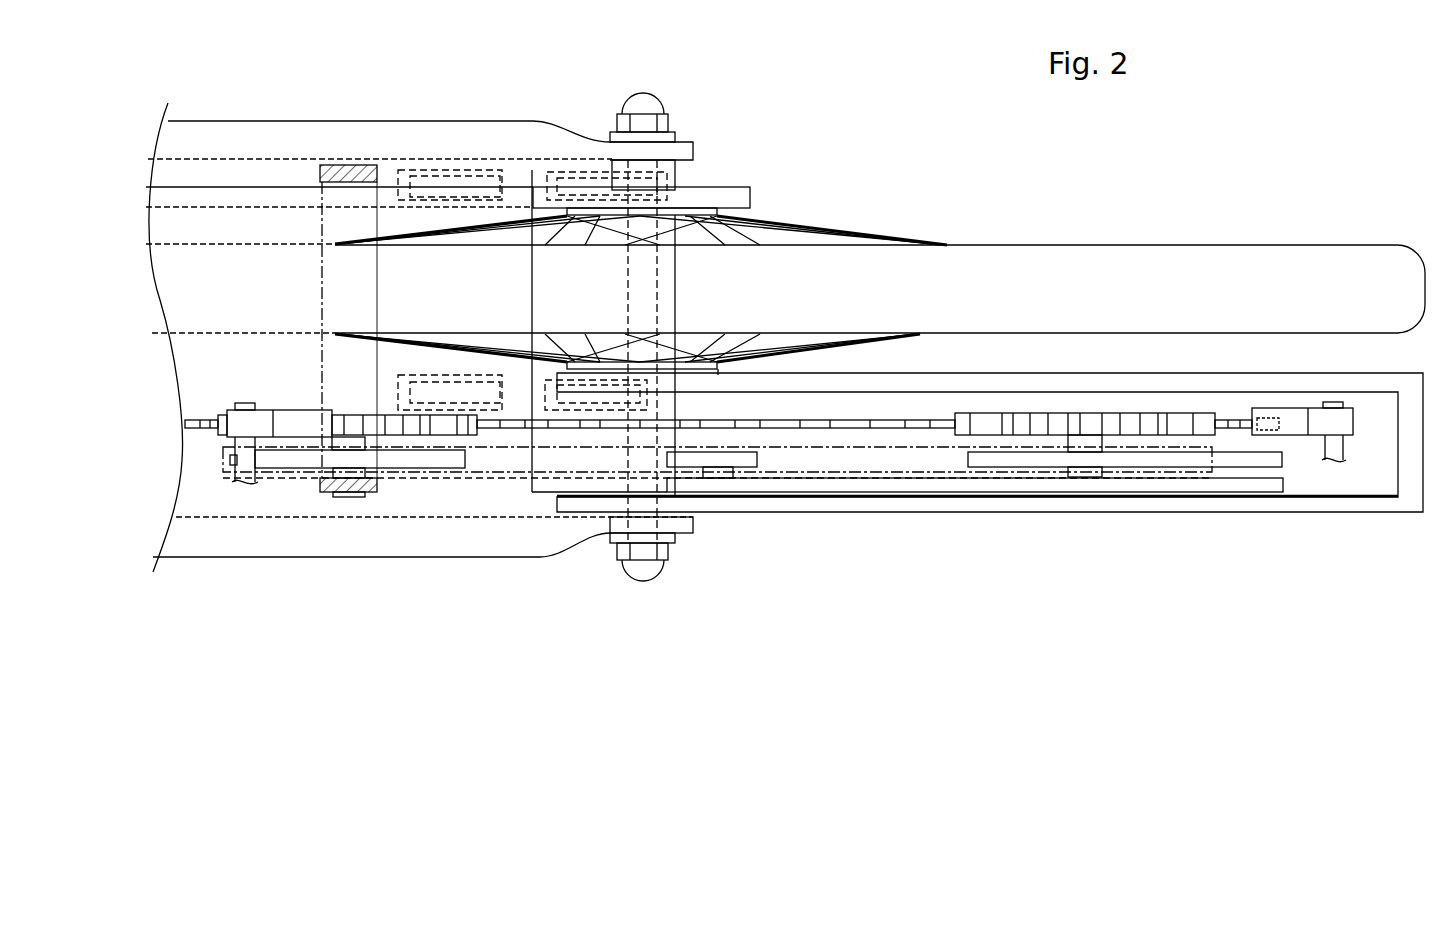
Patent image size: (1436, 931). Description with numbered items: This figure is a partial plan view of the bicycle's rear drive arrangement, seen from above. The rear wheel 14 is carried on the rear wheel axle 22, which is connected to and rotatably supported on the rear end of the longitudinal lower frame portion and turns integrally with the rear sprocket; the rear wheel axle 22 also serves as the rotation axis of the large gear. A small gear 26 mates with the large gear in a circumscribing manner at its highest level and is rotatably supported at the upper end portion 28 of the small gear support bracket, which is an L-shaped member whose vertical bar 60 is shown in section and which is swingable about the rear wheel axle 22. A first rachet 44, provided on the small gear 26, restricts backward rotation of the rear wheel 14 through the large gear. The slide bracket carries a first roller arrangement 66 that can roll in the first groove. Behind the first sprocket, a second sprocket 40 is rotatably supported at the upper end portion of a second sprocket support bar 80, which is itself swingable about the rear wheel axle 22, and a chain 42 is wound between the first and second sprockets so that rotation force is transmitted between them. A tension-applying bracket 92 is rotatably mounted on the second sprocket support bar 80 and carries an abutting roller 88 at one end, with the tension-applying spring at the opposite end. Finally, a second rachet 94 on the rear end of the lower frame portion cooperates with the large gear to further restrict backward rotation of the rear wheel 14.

The rear wheel 14 is at (1300, 268).
The rear wheel axle 22 is at (644, 588).
The small gear 26 is at (442, 432).
The upper end portion 28 is at (400, 460).
The second sprocket 40 is at (1035, 430).
The chain 42 is at (835, 470).
The first rachet 44 is at (288, 427).
The vertical bar 60 is at (345, 165).
The first roller arrangement 66 is at (445, 172).
The second sprocket support bar 80 is at (972, 512).
The abutting roller 88 is at (732, 460).
The tension-applying bracket 92 is at (1153, 485).
The second rachet 94 is at (1290, 425).